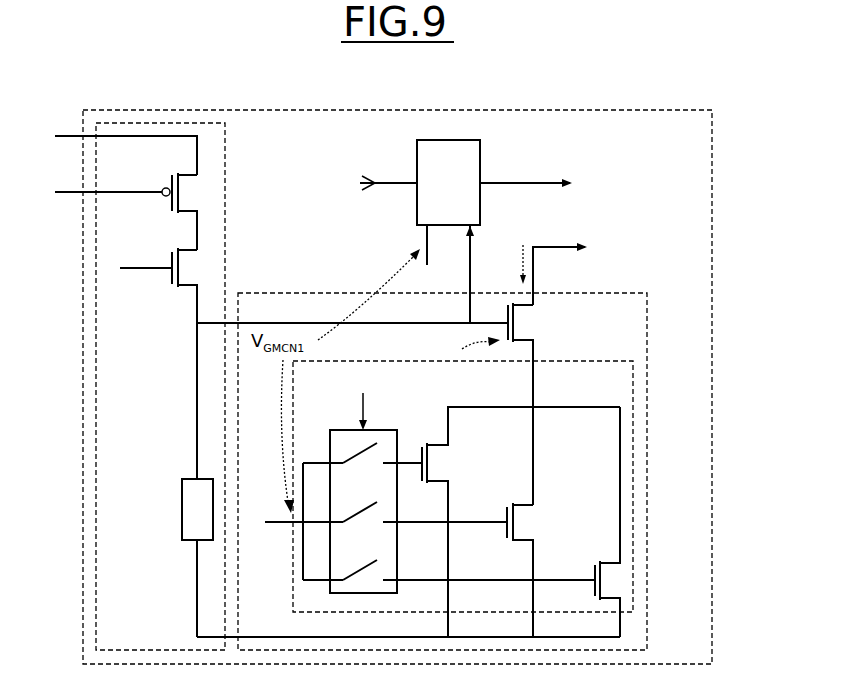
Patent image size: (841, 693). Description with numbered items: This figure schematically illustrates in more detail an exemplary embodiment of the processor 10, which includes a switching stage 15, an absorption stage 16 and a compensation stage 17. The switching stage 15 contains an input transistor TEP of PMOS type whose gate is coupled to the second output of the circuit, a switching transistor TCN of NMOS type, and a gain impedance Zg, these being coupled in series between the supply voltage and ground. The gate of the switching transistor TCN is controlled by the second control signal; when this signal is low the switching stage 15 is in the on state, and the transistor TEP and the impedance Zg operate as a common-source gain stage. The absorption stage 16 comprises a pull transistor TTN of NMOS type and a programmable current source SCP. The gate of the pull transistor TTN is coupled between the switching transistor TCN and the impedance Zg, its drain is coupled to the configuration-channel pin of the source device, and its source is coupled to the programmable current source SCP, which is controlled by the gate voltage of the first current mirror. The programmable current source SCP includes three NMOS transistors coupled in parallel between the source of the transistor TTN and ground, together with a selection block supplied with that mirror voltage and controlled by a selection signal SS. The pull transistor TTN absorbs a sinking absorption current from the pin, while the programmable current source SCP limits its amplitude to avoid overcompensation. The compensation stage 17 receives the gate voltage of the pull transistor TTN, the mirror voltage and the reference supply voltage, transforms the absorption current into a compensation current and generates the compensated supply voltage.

The processor 10 is at (385, 109).
The switching stage 15 is at (225, 238).
The absorption stage 16 is at (647, 457).
The compensation stage 17 is at (461, 194).
The input transistor TEP is at (212, 189).
The switching transistor TCN is at (165, 298).
The pull transistor TTN is at (544, 327).
The gain impedance Zg is at (197, 558).
The selection signal SS is at (430, 482).
The programmable current source SCP is at (633, 500).